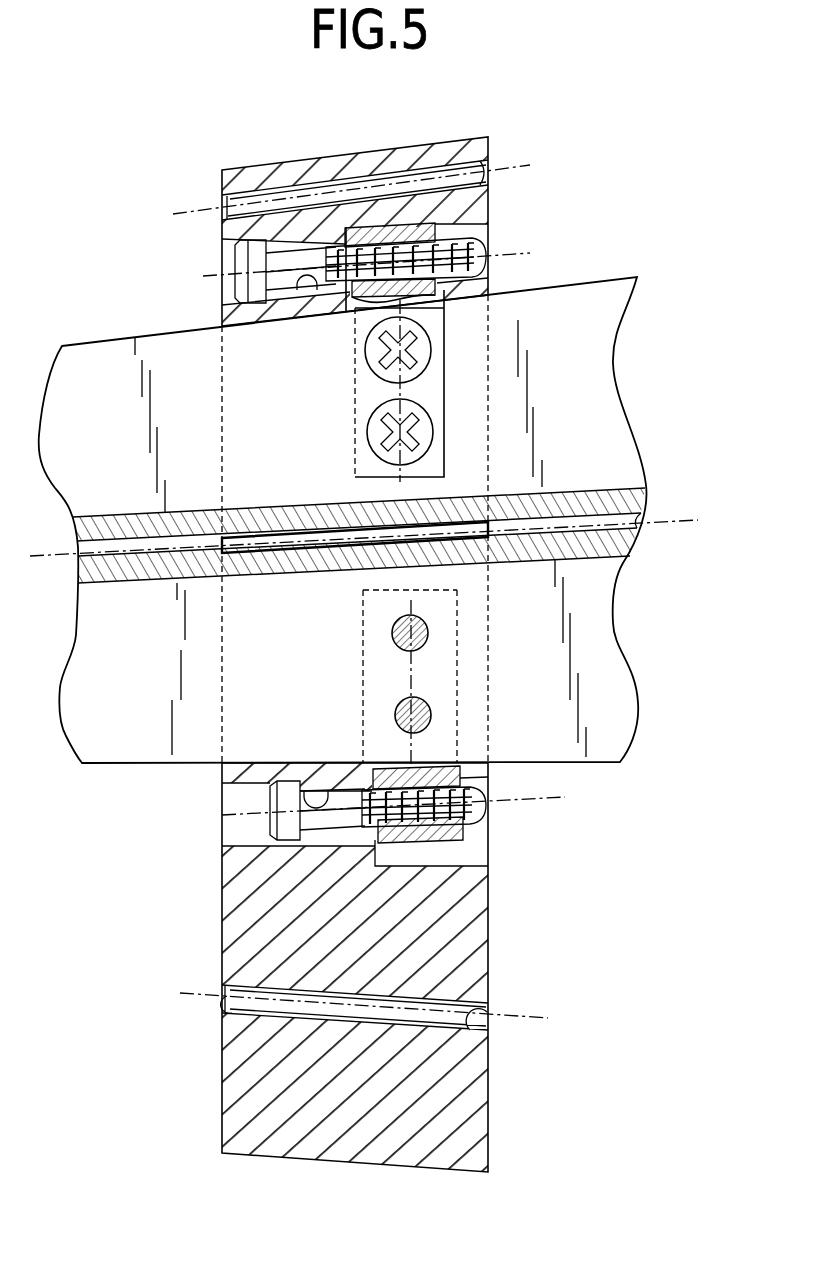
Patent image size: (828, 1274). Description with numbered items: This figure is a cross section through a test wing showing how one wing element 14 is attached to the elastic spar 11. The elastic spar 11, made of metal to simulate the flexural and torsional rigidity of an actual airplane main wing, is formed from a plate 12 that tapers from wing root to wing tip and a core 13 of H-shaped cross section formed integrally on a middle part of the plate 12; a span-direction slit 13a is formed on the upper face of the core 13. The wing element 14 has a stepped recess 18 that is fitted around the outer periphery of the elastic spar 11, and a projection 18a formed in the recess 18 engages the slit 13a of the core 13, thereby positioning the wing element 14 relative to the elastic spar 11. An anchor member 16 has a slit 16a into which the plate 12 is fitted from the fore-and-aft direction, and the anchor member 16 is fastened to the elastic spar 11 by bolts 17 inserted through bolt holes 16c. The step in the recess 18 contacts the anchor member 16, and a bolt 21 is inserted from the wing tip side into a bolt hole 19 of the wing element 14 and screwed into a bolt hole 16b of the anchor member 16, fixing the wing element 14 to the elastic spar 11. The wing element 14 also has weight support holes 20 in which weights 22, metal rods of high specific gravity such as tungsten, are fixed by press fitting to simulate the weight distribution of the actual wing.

The elastic spar 11 is at (592, 270).
The plate 12 is at (590, 363).
The core 13 is at (594, 490).
The slit 13a is at (643, 524).
The wing element 14 is at (222, 904).
The anchor member 16 is at (355, 457).
The slit 16a is at (392, 767).
The bolt hole 16b is at (425, 273).
The bolt hole 16c is at (428, 632).
The bolt 17 is at (372, 432).
The stepped recess 18 is at (468, 860).
The projection 18a is at (455, 500).
The bolt hole 19 is at (309, 292).
The weight support hole 20 is at (490, 178).
The bolt 21 is at (250, 285).
The weight 22 is at (225, 205).